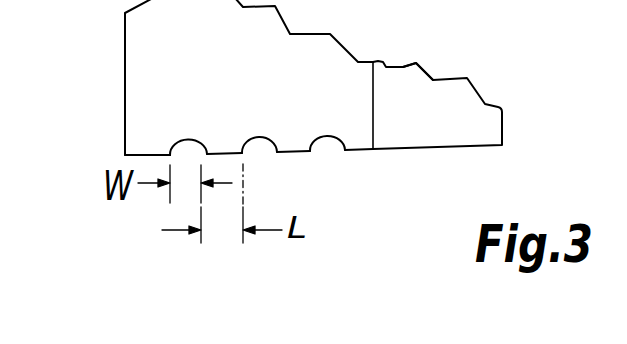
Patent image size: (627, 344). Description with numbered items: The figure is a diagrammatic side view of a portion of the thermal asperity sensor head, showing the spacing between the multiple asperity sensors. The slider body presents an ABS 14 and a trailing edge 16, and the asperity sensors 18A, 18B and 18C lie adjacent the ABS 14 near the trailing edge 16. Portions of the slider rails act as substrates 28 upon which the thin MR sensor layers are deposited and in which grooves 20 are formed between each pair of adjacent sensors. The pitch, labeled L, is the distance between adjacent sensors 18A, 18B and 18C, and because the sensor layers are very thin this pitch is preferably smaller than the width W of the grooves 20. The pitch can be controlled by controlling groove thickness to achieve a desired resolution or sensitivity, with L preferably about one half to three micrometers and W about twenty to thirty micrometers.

The ABS 14 is at (448, 150).
The trailing edge 16 is at (125, 80).
The asperity sensor 18A is at (135, 153).
The asperity sensor 18B is at (212, 154).
The asperity sensor 18C is at (288, 152).
The grooves 20 is at (190, 140).
The substrates 28 is at (403, 83).